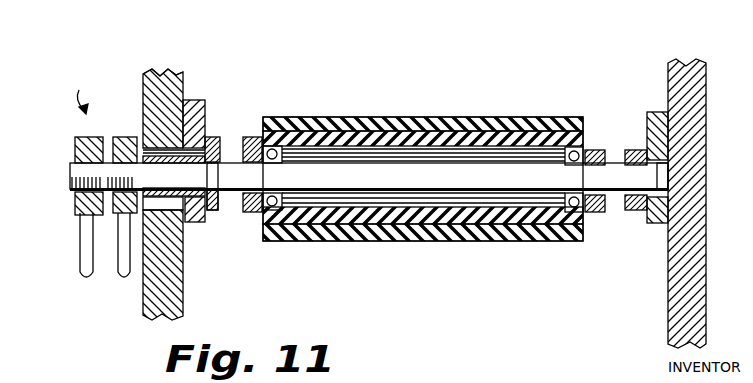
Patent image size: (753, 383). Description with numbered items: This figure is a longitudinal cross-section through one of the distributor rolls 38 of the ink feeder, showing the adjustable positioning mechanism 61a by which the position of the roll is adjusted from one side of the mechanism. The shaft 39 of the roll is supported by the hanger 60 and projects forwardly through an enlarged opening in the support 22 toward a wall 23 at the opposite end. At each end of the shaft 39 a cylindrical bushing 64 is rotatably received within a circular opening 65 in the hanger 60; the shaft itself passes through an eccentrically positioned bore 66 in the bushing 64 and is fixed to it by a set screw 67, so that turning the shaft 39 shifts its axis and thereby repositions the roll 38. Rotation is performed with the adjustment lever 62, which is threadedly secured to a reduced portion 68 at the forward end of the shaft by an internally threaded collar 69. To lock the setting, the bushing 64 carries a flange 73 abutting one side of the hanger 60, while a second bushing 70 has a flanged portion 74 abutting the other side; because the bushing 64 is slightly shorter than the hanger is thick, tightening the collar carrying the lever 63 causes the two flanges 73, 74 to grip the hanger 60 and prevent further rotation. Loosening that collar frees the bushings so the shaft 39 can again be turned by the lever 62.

The adjustable positioning mechanism 61a is at (79, 87).
The bushing 70 is at (143, 140).
The flanged portion 74 is at (176, 74).
The hanger 60 is at (205, 101).
The circular opening 65 is at (214, 137).
The cylindrical bushing 64 is at (226, 146).
The flange 73 is at (208, 150).
The distributor roll 38 is at (440, 117).
The shaft 39 is at (369, 176).
The right side wall 23 is at (708, 133).
The support 22 is at (185, 270).
The eccentrically positioned bore 66 is at (214, 212).
The set screw 67 is at (248, 213).
The reduced portion 68 is at (73, 170).
The internally threaded collar 69 is at (73, 192).
The adjustment lever 62 is at (88, 278).
The adjustment lever 63 is at (125, 278).